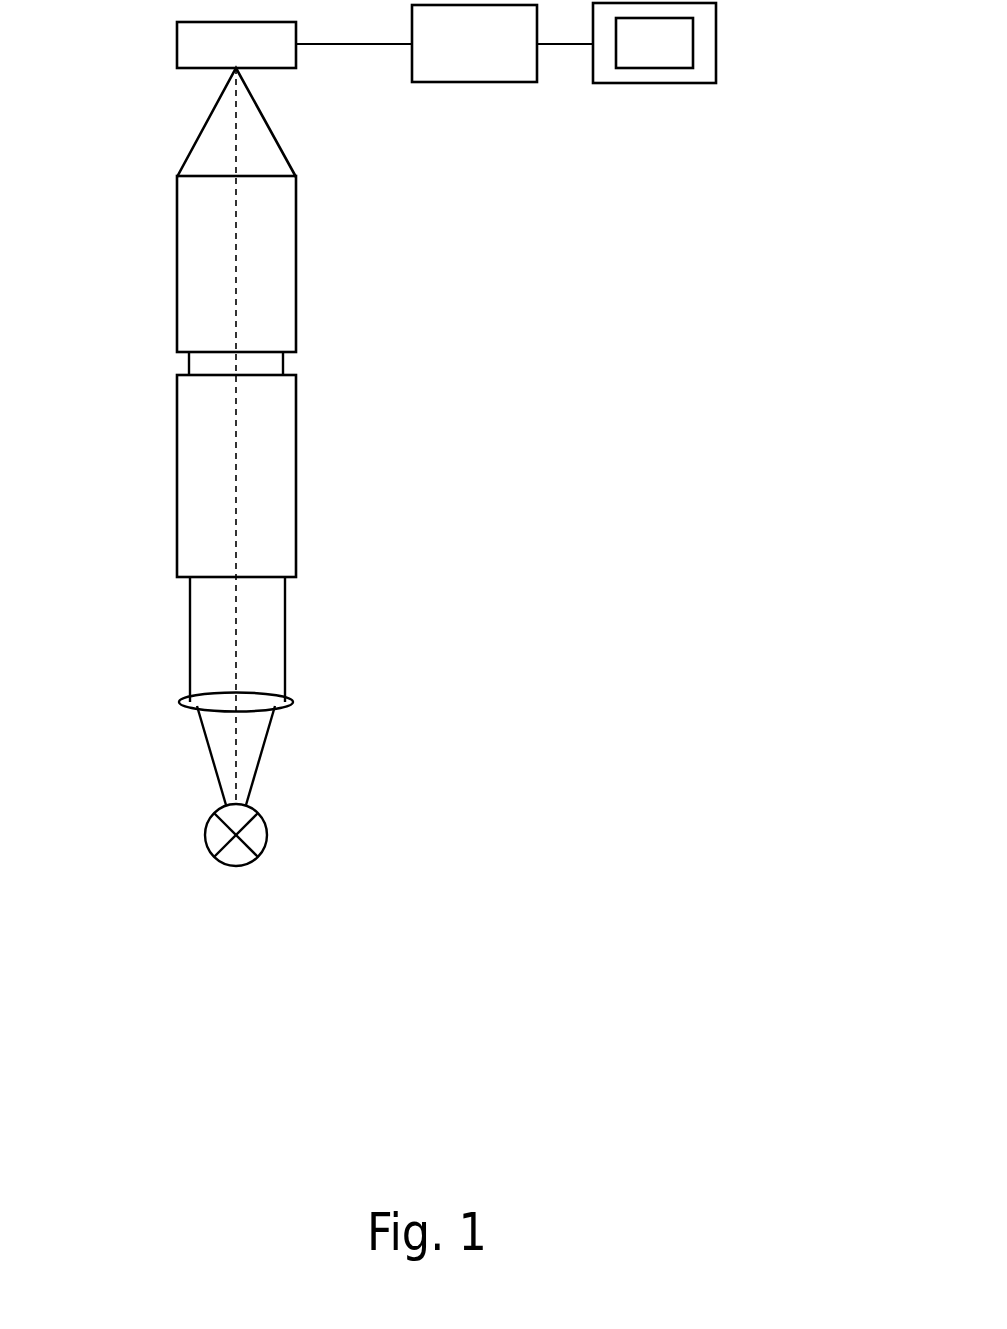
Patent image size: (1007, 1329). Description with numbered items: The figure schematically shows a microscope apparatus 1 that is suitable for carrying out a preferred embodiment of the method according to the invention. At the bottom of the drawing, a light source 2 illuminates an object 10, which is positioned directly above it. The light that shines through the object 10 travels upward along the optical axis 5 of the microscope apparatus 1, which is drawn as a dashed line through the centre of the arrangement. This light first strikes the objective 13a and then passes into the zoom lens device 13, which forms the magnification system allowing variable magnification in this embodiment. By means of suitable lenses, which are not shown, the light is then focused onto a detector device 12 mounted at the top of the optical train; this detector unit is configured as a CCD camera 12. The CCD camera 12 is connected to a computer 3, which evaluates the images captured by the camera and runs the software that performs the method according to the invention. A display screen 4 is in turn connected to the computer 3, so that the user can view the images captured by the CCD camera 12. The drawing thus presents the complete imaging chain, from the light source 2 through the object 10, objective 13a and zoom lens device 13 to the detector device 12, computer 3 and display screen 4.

The microscope apparatus 1 is at (558, 397).
The light source 2 is at (267, 845).
The computer 3 is at (487, 72).
The display screen 4 is at (686, 48).
The optical axis 5 is at (237, 627).
The object 10 is at (291, 702).
The detector device 12 is at (200, 45).
The zoom lens device 13 is at (283, 274).
The objective 13a is at (283, 476).